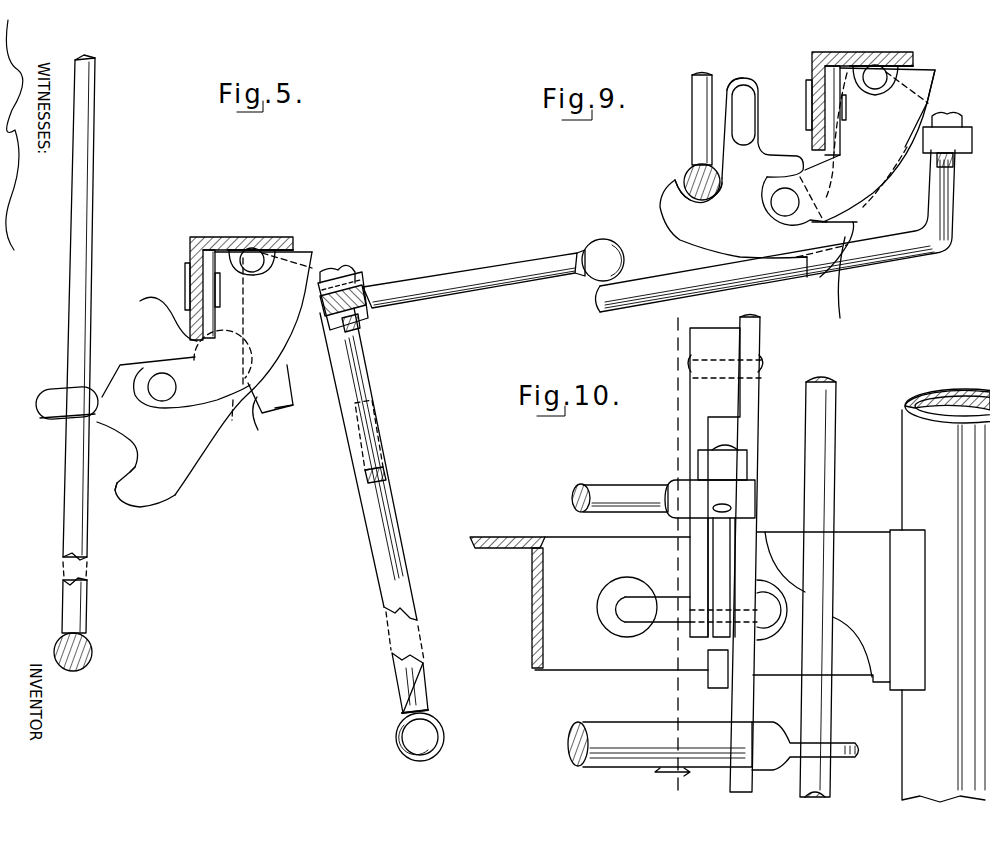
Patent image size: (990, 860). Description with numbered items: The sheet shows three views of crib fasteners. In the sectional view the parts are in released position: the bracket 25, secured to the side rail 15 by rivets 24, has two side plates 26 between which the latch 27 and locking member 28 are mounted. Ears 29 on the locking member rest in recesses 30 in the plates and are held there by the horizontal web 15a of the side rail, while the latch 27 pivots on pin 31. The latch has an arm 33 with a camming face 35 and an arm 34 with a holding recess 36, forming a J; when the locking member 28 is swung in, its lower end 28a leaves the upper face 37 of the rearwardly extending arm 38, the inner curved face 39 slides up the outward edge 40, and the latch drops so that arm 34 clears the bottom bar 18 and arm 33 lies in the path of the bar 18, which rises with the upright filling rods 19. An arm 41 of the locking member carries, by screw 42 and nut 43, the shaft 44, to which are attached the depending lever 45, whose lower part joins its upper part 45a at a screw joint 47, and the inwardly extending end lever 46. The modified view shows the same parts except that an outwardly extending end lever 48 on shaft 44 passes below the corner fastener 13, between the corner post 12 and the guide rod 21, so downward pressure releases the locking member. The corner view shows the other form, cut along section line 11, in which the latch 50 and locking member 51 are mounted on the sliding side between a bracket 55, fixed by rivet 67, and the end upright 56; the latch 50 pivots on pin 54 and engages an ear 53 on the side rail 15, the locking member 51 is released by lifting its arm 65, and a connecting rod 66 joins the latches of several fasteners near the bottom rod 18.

In FIG. 10, the section line 11 is at (668, 561).
In FIG. 10, the corner post 12 is at (946, 595).
In FIG. 10, the corner fastener 13 is at (907, 610).
In FIG. 5, the side rail 15 is at (190, 240).
In FIG. 9, the side rail 15 is at (812, 66).
In FIG. 10, the side rail 15 is at (510, 546).
In FIG. 5, the horizontal web 15a is at (223, 237).
In FIG. 9, the horizontal web 15a is at (842, 66).
In FIG. 5, the bottom bar 18 is at (92, 650).
In FIG. 9, the bottom bar 18 is at (688, 172).
In FIG. 10, the bottom bar 18 is at (713, 627).
In FIG. 5, the upright filling rod 19 is at (88, 173).
In FIG. 9, the upright filling rod 19 is at (692, 94).
In FIG. 10, the guide rod 21 is at (818, 587).
In FIG. 5, the rivet 24 is at (186, 276).
In FIG. 9, the rivet 24 is at (808, 100).
In FIG. 5, the bracket 25 is at (190, 395).
In FIG. 9, the bracket 25 is at (936, 84).
In FIG. 5, the side plate 26 is at (253, 320).
In FIG. 9, the side plate 26 is at (867, 145).
In FIG. 5, the latch 27 is at (173, 432).
In FIG. 9, the latch 27 is at (743, 177).
In FIG. 5, the locking member 28 is at (270, 389).
In FIG. 9, the locking member 28 is at (926, 118).
In FIG. 5, the lower end of locking member 28a is at (278, 412).
In FIG. 9, the lower end of locking member 28a is at (857, 222).
In FIG. 5, the ear 29 is at (256, 254).
In FIG. 9, the ear 29 is at (880, 74).
In FIG. 5, the recess 30 is at (298, 252).
In FIG. 9, the recess 30 is at (918, 70).
In FIG. 5, the pin 31 is at (162, 386).
In FIG. 9, the pin 31 is at (785, 202).
In FIG. 5, the arm 33 is at (67, 403).
In FIG. 9, the arm 33 is at (743, 115).
In FIG. 5, the arm 34 is at (135, 485).
In FIG. 9, the arm 34 is at (686, 202).
In FIG. 5, the camming face 35 is at (62, 421).
In FIG. 9, the camming face 35 is at (730, 86).
In FIG. 5, the holding recess 36 is at (125, 463).
In FIG. 9, the holding recess 36 is at (704, 204).
In FIG. 5, the upper face 37 is at (142, 301).
In FIG. 9, the upper face 37 is at (840, 225).
In FIG. 9, the rearwardly extending arm 38 is at (822, 245).
In FIG. 5, the inner curved face 39 is at (232, 422).
In FIG. 9, the inner curved face 39 is at (839, 285).
In FIG. 5, the outward edge 40 is at (266, 424).
In FIG. 5, the arm 41 is at (363, 278).
In FIG. 9, the arm 41 is at (972, 136).
In FIG. 5, the screw 42 is at (345, 272).
In FIG. 5, the nut 43 is at (366, 318).
In FIG. 9, the nut 43 is at (955, 160).
In FIG. 5, the shaft 44 is at (368, 290).
In FIG. 5, the depending lever 45 is at (386, 513).
In FIG. 5, the upper part of lever 45a is at (372, 393).
In FIG. 5, the end lever 46 is at (474, 279).
In FIG. 5, the screw joint 47 is at (367, 440).
In FIG. 9, the end lever 48 is at (932, 218).
In FIG. 10, the latch 50 is at (720, 669).
In FIG. 10, the locking member 51 is at (721, 577).
In FIG. 10, the ear 53 is at (701, 610).
In FIG. 10, the pin 54 is at (674, 626).
In FIG. 10, the bracket 55 is at (690, 548).
In FIG. 10, the end upright 56 is at (752, 407).
In FIG. 10, the arm 65 is at (722, 462).
In FIG. 10, the connecting rod 66 is at (710, 499).
In FIG. 10, the rivet 67 is at (766, 363).